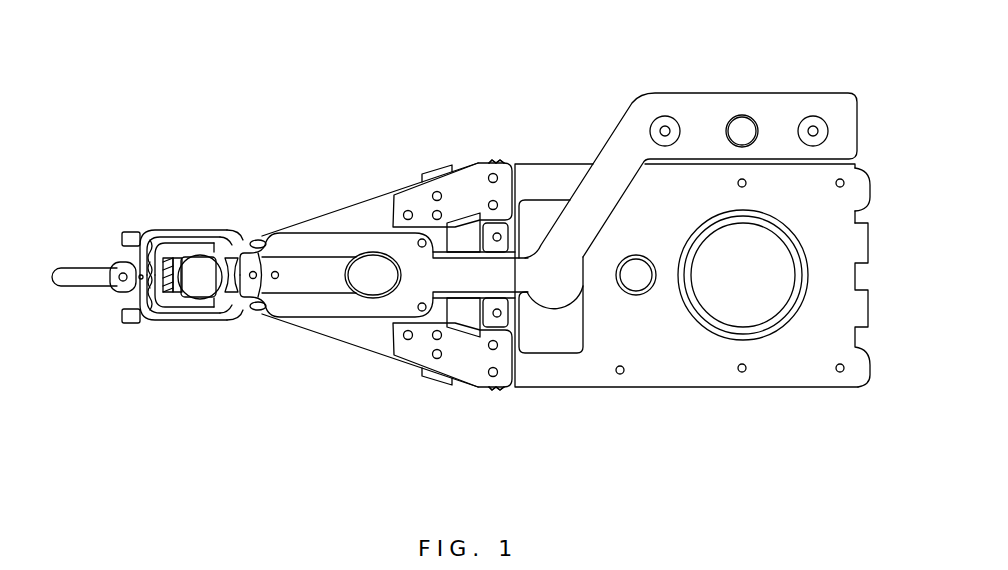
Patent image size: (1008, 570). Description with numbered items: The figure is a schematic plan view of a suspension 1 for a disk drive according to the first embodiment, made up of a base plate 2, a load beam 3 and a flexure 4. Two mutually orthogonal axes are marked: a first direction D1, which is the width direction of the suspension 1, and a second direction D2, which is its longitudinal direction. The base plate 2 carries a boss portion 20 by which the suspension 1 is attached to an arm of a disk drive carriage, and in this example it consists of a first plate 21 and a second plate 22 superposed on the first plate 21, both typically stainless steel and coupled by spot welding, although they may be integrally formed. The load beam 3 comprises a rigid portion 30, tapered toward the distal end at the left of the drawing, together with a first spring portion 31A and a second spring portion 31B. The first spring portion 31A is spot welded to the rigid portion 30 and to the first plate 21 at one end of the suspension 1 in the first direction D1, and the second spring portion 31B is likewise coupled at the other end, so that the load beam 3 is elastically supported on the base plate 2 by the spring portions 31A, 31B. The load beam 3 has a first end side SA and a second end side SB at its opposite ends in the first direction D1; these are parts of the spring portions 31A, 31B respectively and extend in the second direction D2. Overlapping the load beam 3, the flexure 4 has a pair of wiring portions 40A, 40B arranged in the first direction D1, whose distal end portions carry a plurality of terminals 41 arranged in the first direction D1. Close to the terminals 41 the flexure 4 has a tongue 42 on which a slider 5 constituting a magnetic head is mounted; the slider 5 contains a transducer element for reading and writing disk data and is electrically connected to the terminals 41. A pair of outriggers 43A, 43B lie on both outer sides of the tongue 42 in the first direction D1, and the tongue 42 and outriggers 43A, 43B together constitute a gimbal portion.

The suspension 1 is at (266, 150).
The base plate 2 is at (865, 450).
The load beam 3 is at (400, 178).
The flexure 4 is at (684, 92).
The slider 5 is at (204, 248).
The boss portion 20 is at (722, 337).
The first plate 21 is at (803, 389).
The second plate 22 is at (848, 389).
The rigid portion 30 is at (353, 207).
The first spring portion 31A is at (458, 382).
The second spring portion 31B is at (460, 170).
The wiring portion 40A is at (302, 314).
The wiring portion 40B is at (302, 236).
The terminals 41 is at (147, 238).
The tongue 42 is at (198, 283).
The outrigger 43A is at (170, 325).
The outrigger 43B is at (177, 228).
The first end side SA is at (500, 394).
The second end side SB is at (500, 153).
The first direction D1 is at (141, 133).
The second direction D2 is at (182, 93).